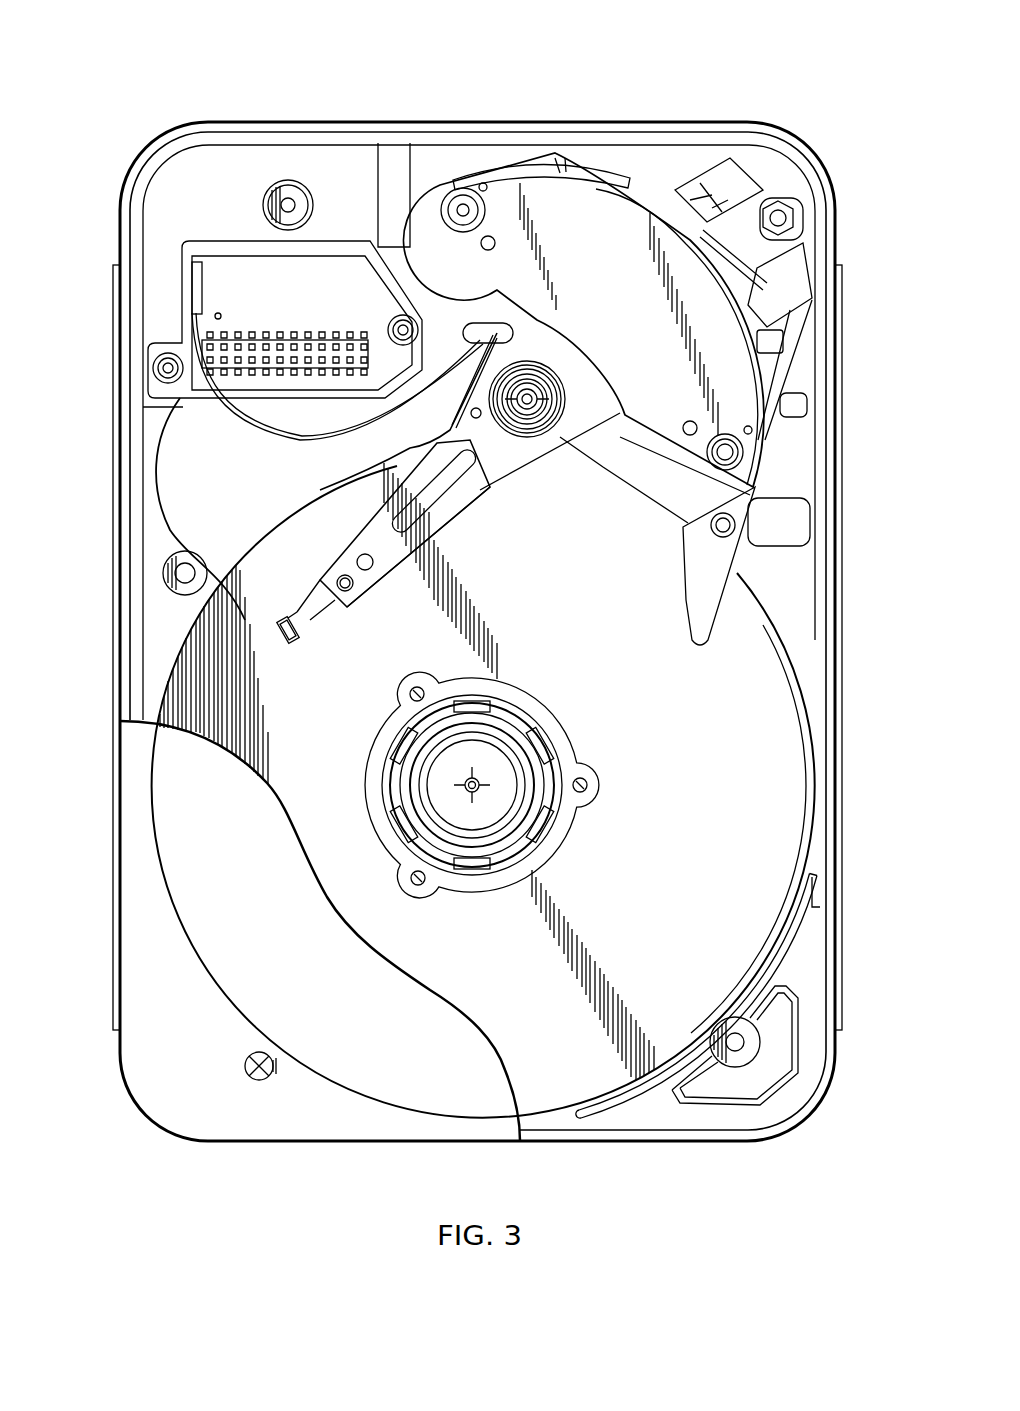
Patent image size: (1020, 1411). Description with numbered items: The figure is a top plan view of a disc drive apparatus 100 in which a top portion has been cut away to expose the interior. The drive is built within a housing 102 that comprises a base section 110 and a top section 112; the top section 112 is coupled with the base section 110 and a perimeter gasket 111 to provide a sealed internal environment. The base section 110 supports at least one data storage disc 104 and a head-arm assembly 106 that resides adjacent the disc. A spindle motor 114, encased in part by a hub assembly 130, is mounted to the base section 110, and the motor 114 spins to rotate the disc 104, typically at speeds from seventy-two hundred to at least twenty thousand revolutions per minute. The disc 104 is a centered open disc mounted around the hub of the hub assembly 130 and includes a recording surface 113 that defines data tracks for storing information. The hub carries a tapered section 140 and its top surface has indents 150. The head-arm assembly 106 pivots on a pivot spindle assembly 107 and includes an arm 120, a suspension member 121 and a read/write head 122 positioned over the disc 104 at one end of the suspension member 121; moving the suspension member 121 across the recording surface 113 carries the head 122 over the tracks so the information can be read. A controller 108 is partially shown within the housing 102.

The disc drive apparatus 100 is at (478, 76).
The housing 102 is at (118, 963).
The data storage disc 104 is at (812, 785).
The head-arm assembly 106 is at (640, 197).
The pivot spindle assembly 107 is at (528, 410).
The controller 108 is at (192, 355).
The base section 110 is at (163, 530).
The perimeter gasket 111 is at (748, 123).
The top section 112 is at (346, 1077).
The recording surface 113 is at (743, 868).
The spindle motor 114 is at (512, 786).
The arm 120 is at (378, 518).
The suspension member 121 is at (396, 596).
The read/write head 122 is at (285, 638).
The hub assembly 130 is at (540, 846).
The tapered section 140 is at (168, 578).
The indents 150 is at (464, 862).